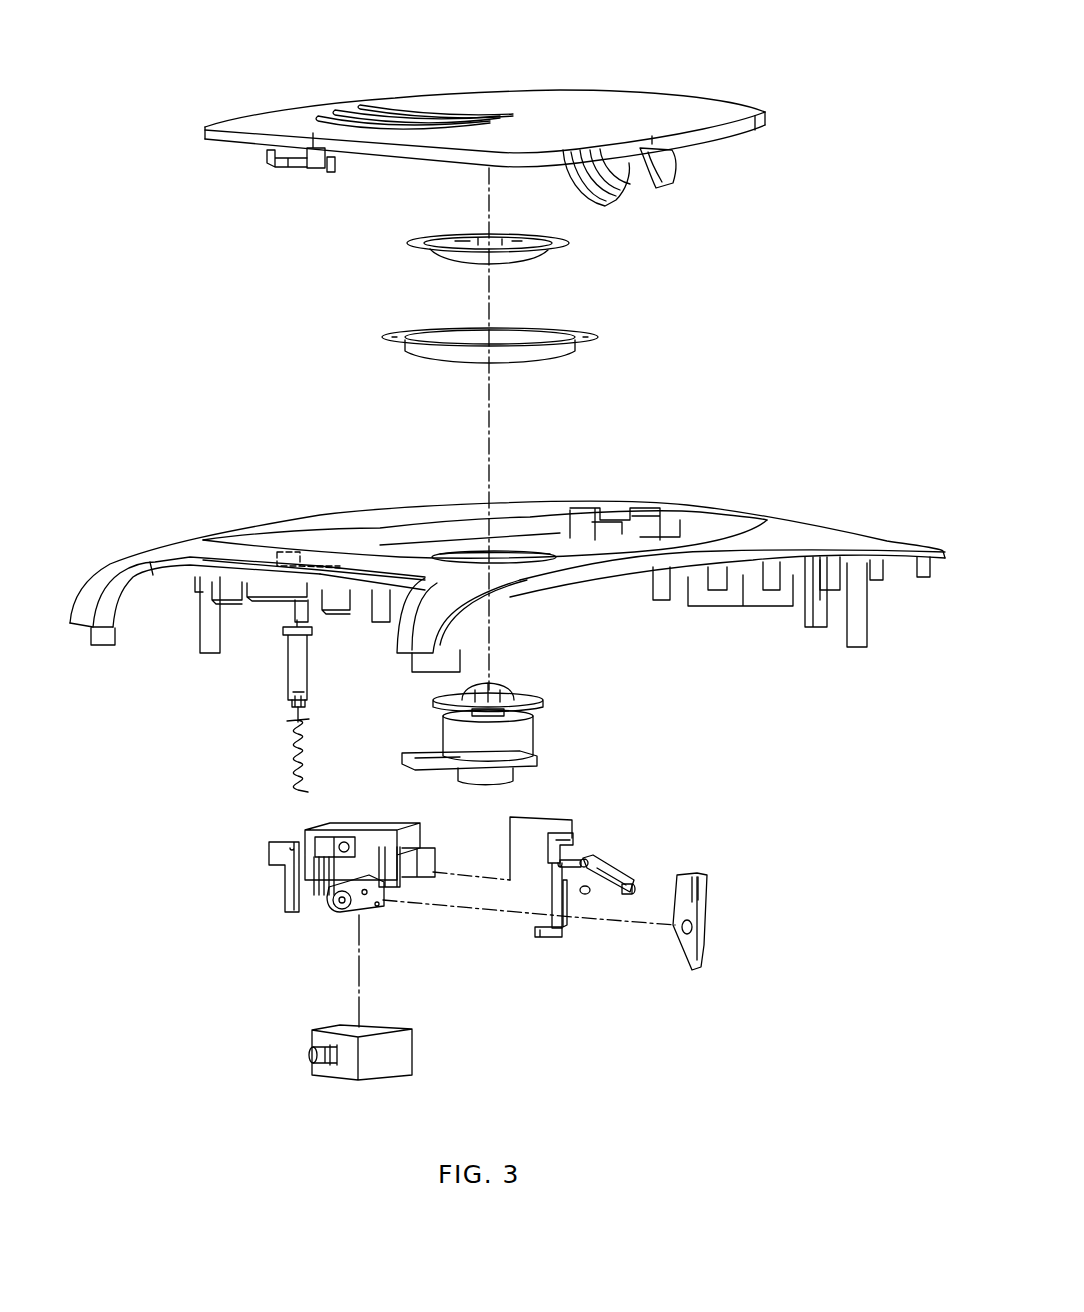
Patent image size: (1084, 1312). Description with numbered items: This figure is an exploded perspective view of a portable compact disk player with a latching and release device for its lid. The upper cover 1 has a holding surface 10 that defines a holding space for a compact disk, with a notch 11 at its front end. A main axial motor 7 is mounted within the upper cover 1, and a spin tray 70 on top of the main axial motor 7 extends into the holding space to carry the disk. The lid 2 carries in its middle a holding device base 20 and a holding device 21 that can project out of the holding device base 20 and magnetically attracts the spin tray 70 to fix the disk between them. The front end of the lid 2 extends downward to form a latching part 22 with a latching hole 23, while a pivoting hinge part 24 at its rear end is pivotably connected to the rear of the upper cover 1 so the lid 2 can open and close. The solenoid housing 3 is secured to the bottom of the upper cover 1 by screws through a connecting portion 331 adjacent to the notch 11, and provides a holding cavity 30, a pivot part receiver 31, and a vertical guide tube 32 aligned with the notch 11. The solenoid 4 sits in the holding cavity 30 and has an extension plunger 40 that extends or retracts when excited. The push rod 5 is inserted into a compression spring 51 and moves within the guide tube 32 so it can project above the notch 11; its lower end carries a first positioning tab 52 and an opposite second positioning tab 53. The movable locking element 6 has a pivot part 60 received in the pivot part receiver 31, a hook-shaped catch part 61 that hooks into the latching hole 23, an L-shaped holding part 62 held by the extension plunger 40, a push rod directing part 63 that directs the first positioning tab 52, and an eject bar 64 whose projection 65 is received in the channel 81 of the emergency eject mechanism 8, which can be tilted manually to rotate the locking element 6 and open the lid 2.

The upper cover 1 is at (507, 549).
The lid 2 is at (485, 126).
The solenoid housing 3 is at (326, 875).
The solenoid 4 is at (313, 1093).
The push rod 5 is at (284, 716).
The movable locking element 6 is at (612, 885).
The main axial motor 7 is at (553, 730).
The emergency eject mechanism 8 is at (719, 921).
The holding surface 10 is at (392, 548).
The notch 11 is at (293, 553).
The holding device base 20 is at (582, 355).
The holding device 21 is at (562, 253).
The latching part 22 is at (270, 172).
The latching hole 23 is at (319, 173).
The pivoting hinge part 24 is at (667, 178).
The holding cavity 30 is at (393, 897).
The pivot part receiver 31 is at (328, 833).
The vertical guide tube 32 is at (282, 907).
The extension plunger 40 is at (308, 1053).
The compression spring 51 is at (285, 755).
The first positioning tab 52 is at (312, 707).
The second positioning tab 53 is at (290, 707).
The pivot part 60 is at (581, 860).
The hook-shaped catch part 61 is at (568, 840).
The L-shaped holding part 62 is at (568, 897).
The push rod directing part 63 is at (537, 937).
The eject bar 64 is at (618, 852).
The projection 65 is at (621, 901).
The spin tray 70 is at (537, 693).
The channel 81 is at (698, 882).
The connecting portion 331 is at (418, 852).